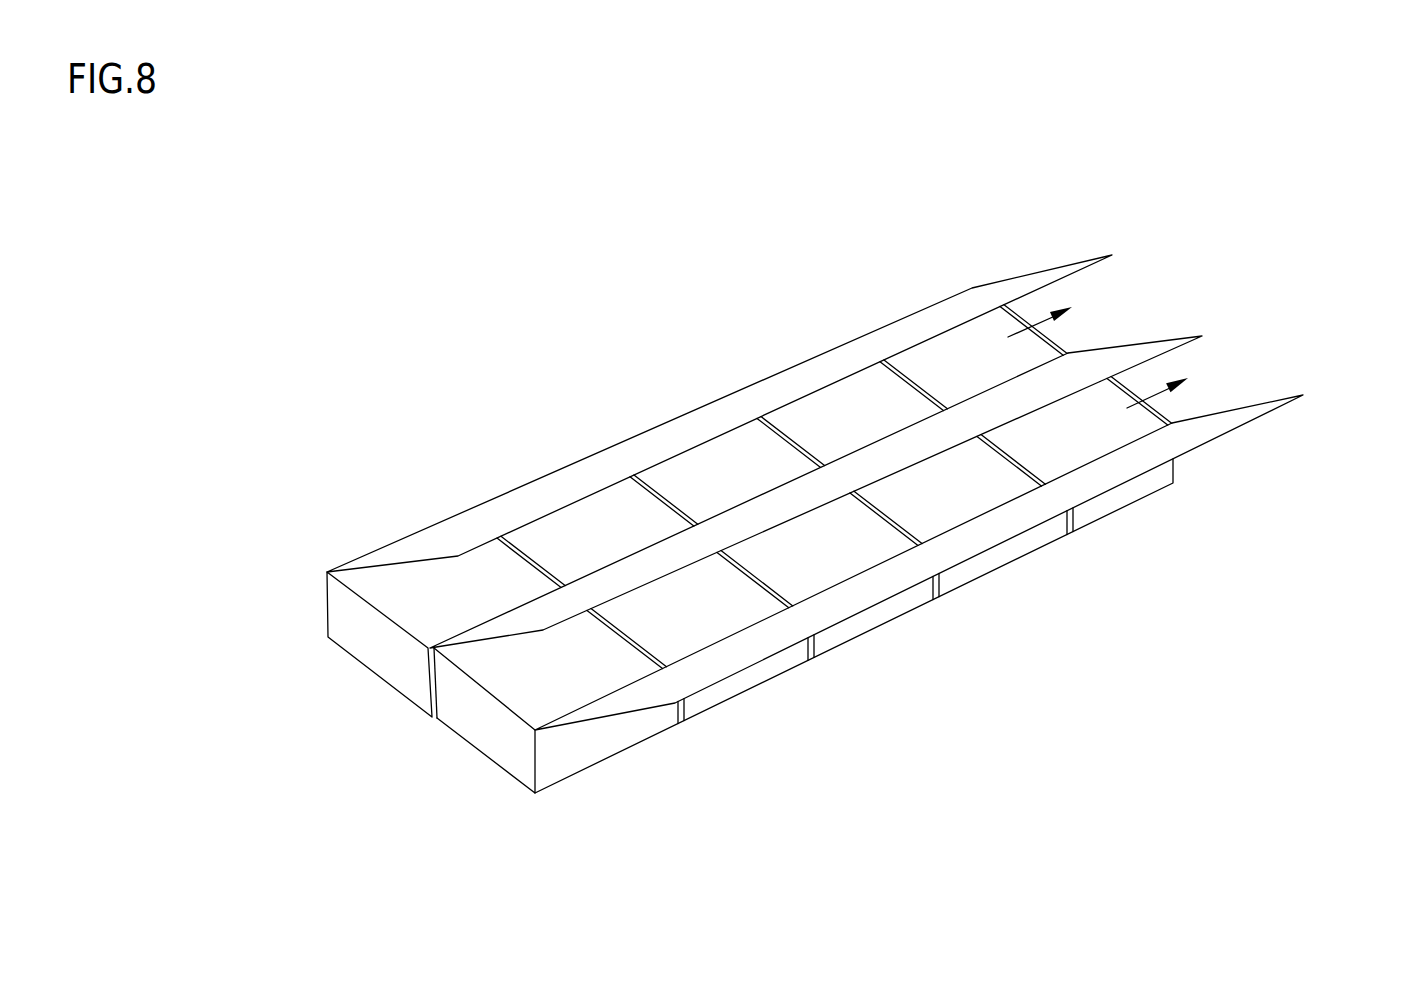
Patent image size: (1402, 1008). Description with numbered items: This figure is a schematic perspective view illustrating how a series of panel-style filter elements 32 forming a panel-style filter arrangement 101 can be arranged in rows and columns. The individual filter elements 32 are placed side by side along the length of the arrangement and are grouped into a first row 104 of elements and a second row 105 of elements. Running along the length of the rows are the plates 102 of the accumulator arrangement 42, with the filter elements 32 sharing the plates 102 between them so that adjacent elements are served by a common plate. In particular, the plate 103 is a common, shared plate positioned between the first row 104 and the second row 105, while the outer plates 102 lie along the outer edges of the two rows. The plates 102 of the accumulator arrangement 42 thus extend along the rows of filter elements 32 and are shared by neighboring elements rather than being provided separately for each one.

The accumulator arrangement 42 is at (960, 258).
The panel-style filter arrangement 101 is at (646, 664).
The plate 102 is at (1065, 260).
The common shared plate 103 is at (1183, 347).
The first row 104 is at (268, 624).
The second row 105 is at (517, 768).
The panel-style filter element 32 is at (467, 749).